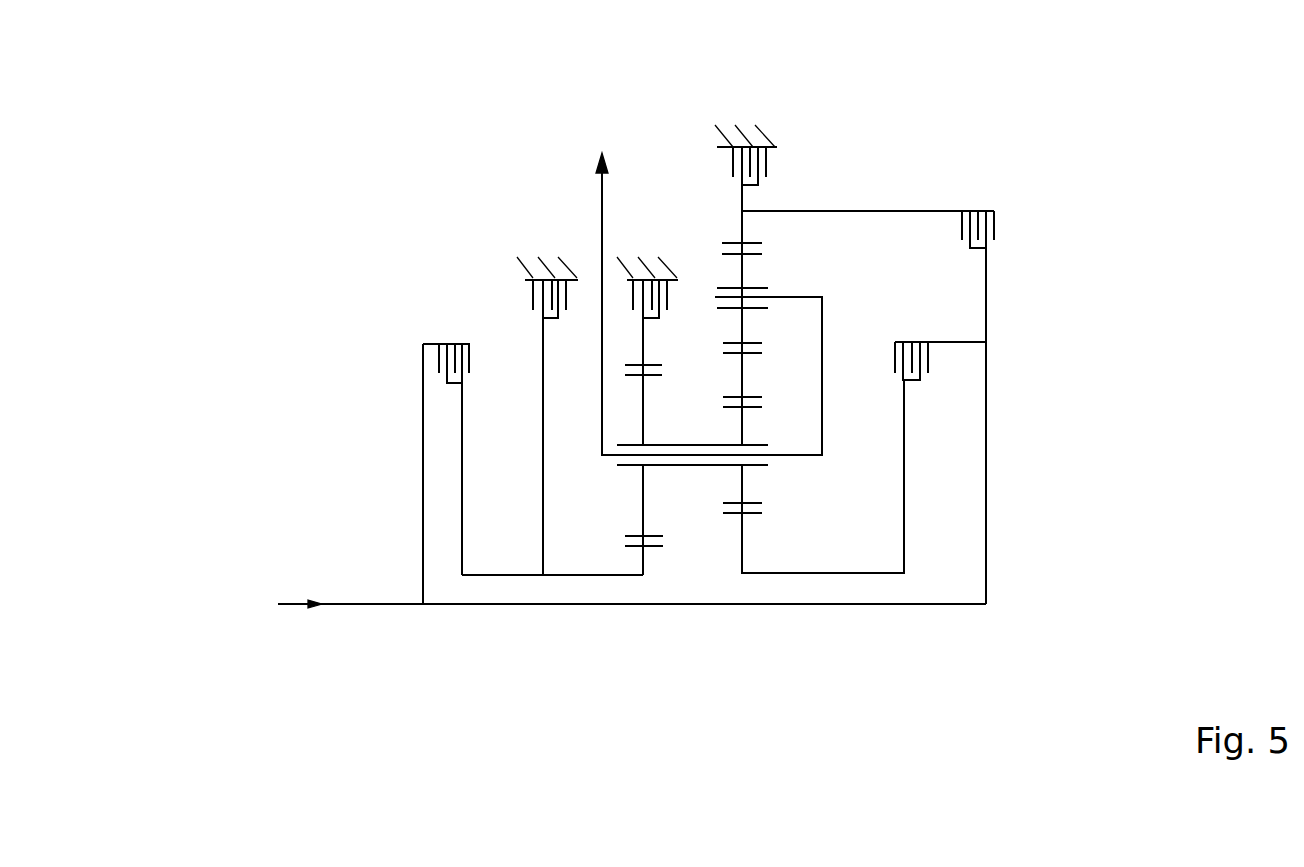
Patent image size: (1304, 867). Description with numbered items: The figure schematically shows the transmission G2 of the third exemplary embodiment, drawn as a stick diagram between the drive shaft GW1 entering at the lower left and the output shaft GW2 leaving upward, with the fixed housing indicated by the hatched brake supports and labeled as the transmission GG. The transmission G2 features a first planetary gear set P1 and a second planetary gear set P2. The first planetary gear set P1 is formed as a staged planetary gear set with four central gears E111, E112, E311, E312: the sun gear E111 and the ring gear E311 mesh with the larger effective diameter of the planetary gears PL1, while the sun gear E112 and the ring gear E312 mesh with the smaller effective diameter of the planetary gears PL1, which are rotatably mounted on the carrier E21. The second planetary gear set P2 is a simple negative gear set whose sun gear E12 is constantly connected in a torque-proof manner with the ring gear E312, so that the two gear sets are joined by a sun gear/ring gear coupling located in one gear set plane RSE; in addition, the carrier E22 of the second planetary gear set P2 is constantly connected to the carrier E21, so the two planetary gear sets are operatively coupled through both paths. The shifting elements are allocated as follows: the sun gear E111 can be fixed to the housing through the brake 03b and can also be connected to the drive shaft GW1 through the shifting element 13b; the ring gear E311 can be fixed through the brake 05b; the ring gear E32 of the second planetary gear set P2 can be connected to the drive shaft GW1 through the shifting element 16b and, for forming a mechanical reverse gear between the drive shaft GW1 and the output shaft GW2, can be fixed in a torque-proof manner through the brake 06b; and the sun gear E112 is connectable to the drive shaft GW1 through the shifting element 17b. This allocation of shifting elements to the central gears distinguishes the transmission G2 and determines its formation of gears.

The drive shaft GW1 is at (387, 604).
The output shaft GW2 is at (603, 342).
The transmission G2 is at (305, 438).
The shifting element 13b is at (445, 338).
The shifting element 03b is at (530, 298).
The shifting element 05b is at (630, 295).
The shifting element 06b is at (723, 172).
The gear set plane RSE is at (741, 118).
The second planetary gear set P2 is at (722, 283).
The first planetary gear set P1 is at (608, 483).
The planetary gears PL1 is at (642, 502).
The transmission GG is at (766, 137).
The central gear of the second planetary gear set E32 is at (752, 238).
The carrier of the second planetary gear set E22 is at (803, 295).
The central gear of the second planetary gear set E12 is at (755, 353).
The central gear of the first planetary gear set E312 is at (760, 392).
The central gear of the first planetary gear set E311 is at (627, 366).
The central gear of the first planetary gear set E111 is at (653, 550).
The central gear of the first planetary gear set E112 is at (728, 517).
The carrier of the first planetary gear set E21 is at (803, 457).
The shifting element 16b is at (1002, 223).
The shifting element 17b is at (920, 327).